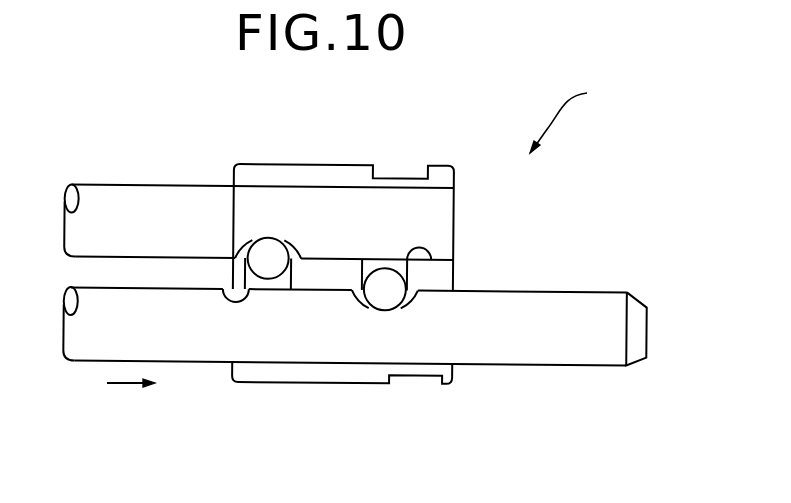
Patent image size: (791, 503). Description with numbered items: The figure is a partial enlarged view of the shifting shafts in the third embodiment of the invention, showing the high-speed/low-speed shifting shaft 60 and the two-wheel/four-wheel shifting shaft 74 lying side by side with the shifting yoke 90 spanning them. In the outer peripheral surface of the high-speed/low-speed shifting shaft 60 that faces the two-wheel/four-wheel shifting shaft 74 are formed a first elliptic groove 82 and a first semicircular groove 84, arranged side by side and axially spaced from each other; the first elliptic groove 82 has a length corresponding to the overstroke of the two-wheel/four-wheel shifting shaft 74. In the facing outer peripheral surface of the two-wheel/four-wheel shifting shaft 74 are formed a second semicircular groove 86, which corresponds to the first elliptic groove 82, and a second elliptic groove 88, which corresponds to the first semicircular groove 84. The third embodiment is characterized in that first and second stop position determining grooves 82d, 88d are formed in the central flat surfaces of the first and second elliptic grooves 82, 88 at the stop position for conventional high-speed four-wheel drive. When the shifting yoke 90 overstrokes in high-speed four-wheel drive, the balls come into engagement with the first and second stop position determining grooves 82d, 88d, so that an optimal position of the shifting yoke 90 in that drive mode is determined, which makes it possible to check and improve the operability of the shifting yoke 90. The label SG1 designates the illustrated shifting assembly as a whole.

The high-speed/low-speed shifting shaft 60 is at (95, 203).
The two-wheel/four-wheel shifting shaft 74 is at (95, 340).
The first elliptic groove 82 is at (237, 252).
The first stop position determining groove 82d is at (268, 244).
The first semicircular groove 84 is at (428, 250).
The second semicircular groove 86 is at (230, 295).
The second elliptic groove 88 is at (412, 300).
The second stop position determining groove 88d is at (390, 303).
The shifting yoke 90 is at (353, 167).
The shift gate unit SG1 is at (591, 114).